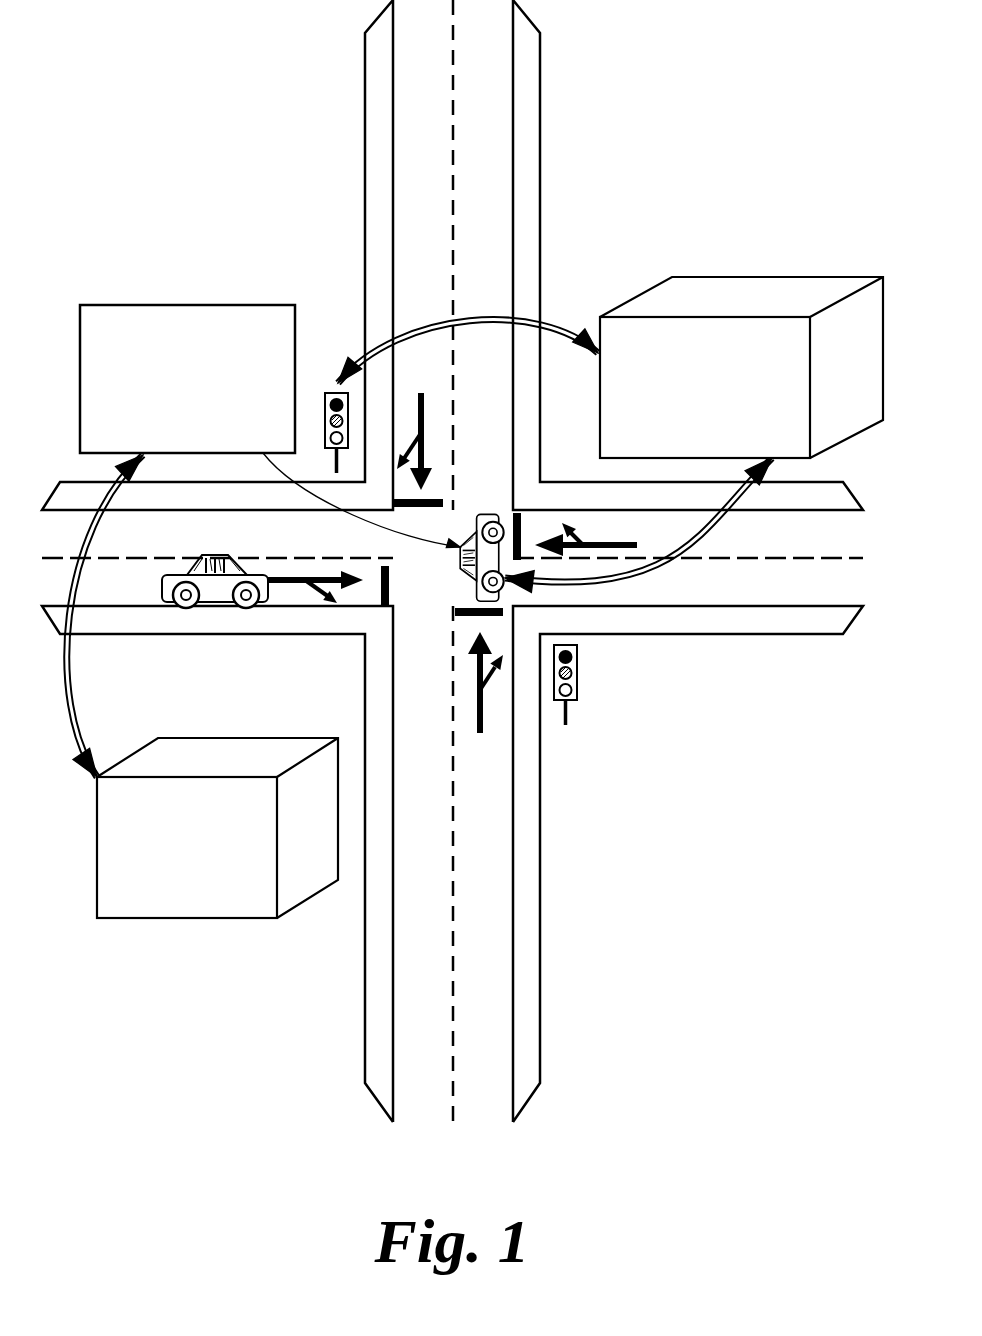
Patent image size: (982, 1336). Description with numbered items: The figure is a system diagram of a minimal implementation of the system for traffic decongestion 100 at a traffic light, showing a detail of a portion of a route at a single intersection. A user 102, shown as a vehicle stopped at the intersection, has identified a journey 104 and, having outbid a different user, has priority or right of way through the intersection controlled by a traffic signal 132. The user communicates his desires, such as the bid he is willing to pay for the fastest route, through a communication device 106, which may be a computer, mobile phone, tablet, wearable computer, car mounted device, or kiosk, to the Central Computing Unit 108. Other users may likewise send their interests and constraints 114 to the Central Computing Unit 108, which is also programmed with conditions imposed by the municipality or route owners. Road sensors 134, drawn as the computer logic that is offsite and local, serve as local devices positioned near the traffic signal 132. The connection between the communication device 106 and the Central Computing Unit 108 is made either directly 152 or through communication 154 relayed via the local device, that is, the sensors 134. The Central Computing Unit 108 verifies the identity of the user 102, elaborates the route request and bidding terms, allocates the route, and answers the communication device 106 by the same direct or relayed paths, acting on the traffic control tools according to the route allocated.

The system and method for traffic decongestion 100 is at (112, 80).
The user 102 is at (485, 513).
The journey 104 is at (477, 692).
The communication device 106 is at (270, 305).
The Central Computing Unit 108 is at (155, 738).
The interests and constraints 114 is at (427, 537).
The traffic signal 132 is at (332, 393).
The road sensors 134 is at (783, 277).
The direct communication 152 is at (72, 662).
The communication via local device 154 is at (713, 548).